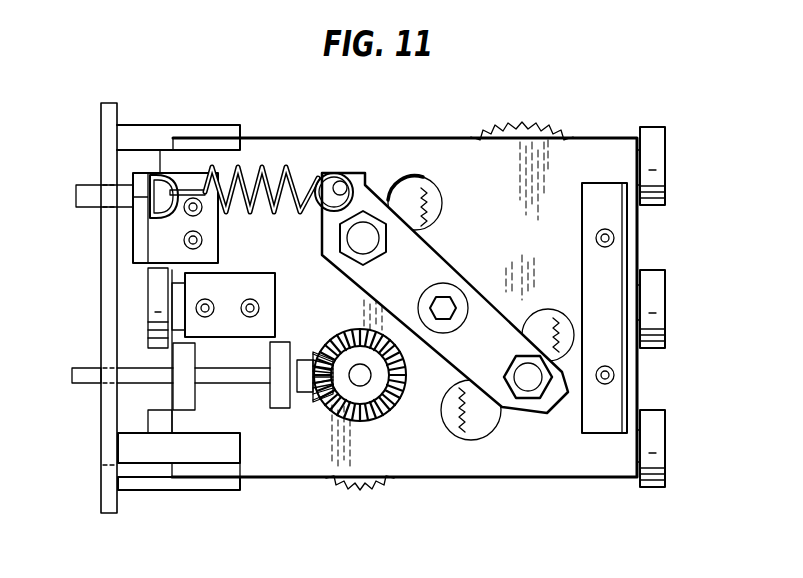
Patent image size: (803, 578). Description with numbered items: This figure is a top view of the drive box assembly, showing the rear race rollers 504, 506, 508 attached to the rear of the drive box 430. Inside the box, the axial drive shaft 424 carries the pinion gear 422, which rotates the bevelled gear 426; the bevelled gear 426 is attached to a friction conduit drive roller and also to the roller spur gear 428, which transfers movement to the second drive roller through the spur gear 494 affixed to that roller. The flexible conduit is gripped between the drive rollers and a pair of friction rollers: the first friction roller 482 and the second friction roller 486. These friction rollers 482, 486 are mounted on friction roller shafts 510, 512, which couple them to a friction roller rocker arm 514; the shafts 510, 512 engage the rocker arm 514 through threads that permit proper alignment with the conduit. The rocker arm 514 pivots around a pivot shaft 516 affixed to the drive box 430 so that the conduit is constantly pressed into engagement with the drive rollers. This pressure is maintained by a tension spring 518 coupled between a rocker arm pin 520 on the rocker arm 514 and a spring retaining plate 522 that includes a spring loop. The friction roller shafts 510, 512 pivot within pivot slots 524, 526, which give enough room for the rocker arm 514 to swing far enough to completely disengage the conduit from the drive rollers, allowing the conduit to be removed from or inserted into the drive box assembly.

The pinion gear 422 is at (319, 405).
The shaft 424 is at (79, 367).
The bevelled gear 426 is at (373, 422).
The roller spur gear 428 is at (380, 488).
The drive box 430 is at (280, 480).
The first friction roller 482 is at (400, 203).
The second friction roller 486 is at (497, 425).
The spur gear 494 is at (553, 135).
The rear race roller 504 is at (666, 180).
The rear race roller 506 is at (666, 312).
The rear race roller 508 is at (658, 488).
The friction roller shaft 510 is at (372, 238).
The friction roller shaft 512 is at (522, 365).
The friction roller rocker arm 514 is at (553, 412).
The pivot shaft 516 is at (461, 290).
The tension spring 518 is at (260, 167).
The rocker arm pin 520 is at (338, 183).
The spring retaining plate 522 is at (140, 172).
The pivot slot 524 is at (442, 203).
The pivot slot 526 is at (546, 309).